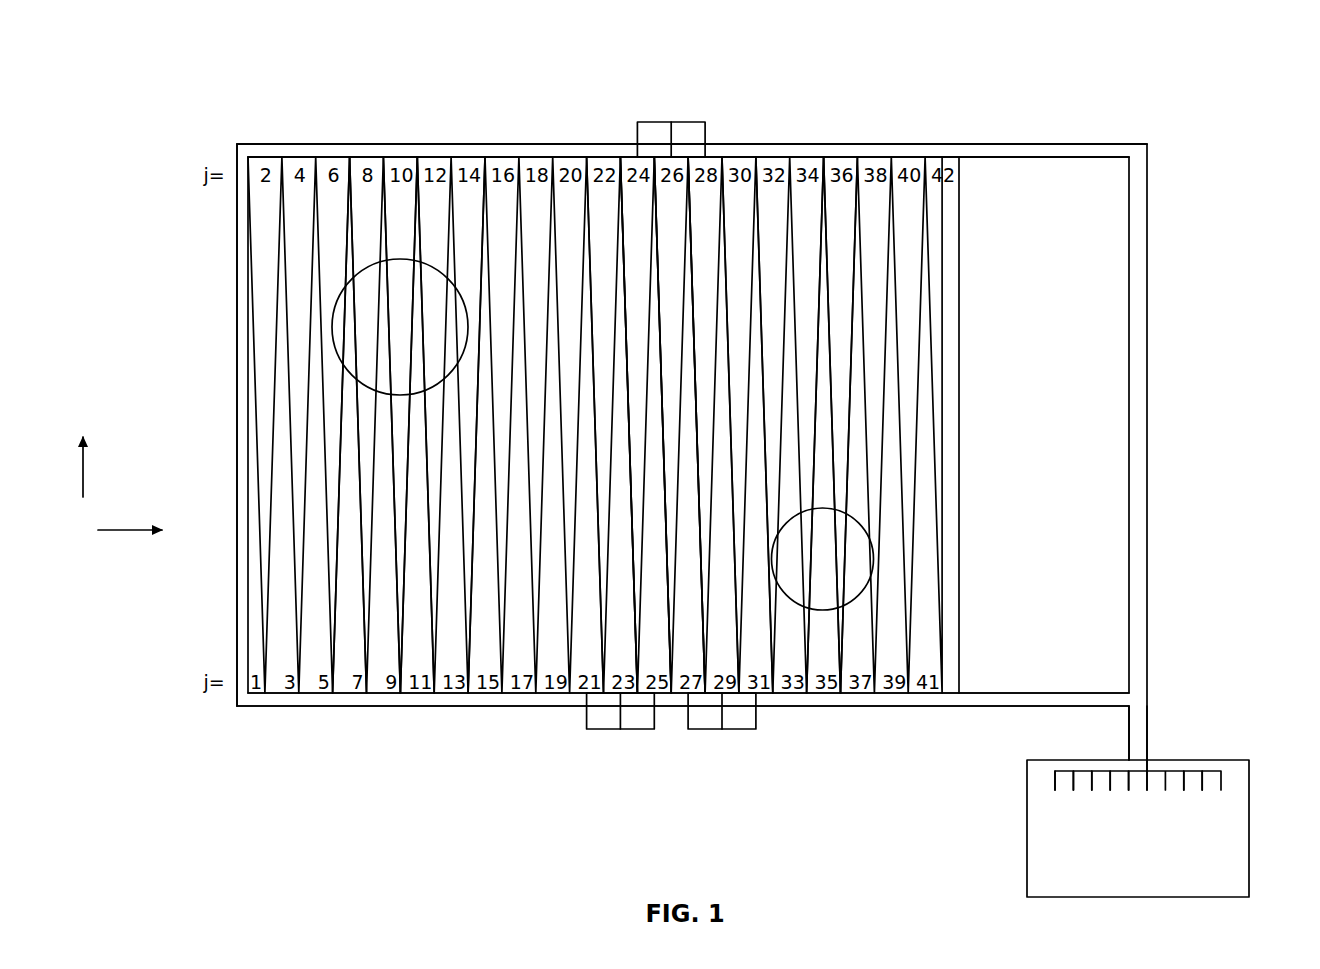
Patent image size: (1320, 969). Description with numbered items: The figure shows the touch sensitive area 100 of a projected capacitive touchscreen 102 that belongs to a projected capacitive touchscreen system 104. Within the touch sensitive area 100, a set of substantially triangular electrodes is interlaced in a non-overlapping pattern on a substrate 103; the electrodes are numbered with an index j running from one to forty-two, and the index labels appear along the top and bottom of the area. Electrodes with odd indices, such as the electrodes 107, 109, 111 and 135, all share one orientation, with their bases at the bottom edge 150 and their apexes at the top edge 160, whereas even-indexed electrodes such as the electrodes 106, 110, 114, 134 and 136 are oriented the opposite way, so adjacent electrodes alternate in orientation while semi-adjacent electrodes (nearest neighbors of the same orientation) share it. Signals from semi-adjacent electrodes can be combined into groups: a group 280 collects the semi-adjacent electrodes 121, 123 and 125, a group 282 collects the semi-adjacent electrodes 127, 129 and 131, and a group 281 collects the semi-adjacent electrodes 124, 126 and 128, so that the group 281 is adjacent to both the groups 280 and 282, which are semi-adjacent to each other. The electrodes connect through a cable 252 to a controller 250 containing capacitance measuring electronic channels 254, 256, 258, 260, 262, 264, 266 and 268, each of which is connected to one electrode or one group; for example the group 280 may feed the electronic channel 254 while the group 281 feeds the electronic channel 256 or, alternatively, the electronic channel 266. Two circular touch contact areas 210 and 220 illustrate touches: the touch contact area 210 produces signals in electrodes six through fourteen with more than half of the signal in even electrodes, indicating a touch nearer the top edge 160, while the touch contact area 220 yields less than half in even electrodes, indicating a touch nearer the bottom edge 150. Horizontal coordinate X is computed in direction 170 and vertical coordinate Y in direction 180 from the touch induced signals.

The touch sensitive area 100 is at (943, 154).
The projected capacitive touchscreen 102 is at (226, 152).
The substrate 103 is at (603, 150).
The projected capacitive touchscreen system 104 is at (214, 74).
The electrode 106 is at (333, 157).
The electrode 107 is at (347, 693).
The electrode 109 is at (392, 693).
The electrode 110 is at (398, 157).
The electrode 111 is at (420, 693).
The electrode 114 is at (464, 157).
The semi-adjacent electrode 121 is at (576, 655).
The semi-adjacent electrode 123 is at (609, 655).
The semi-adjacent electrode 124 is at (624, 210).
The semi-adjacent electrode 125 is at (643, 655).
The semi-adjacent electrode 126 is at (658, 210).
The semi-adjacent electrode 127 is at (676, 655).
The semi-adjacent electrode 128 is at (691, 210).
The semi-adjacent electrode 129 is at (710, 655).
The semi-adjacent electrode 131 is at (744, 655).
The electrode 134 is at (802, 157).
The electrode 135 is at (823, 693).
The electrode 136 is at (830, 157).
The bottom edge 150 is at (527, 716).
The top edge 160 is at (354, 138).
The direction 170 is at (127, 532).
The direction 180 is at (83, 472).
The touch contact area 210 is at (332, 325).
The touch contact area 220 is at (873, 548).
The controller 250 is at (1210, 760).
The cable 252 is at (1148, 625).
The electronic channel 254 is at (1070, 788).
The electronic channel 256 is at (1094, 788).
The electronic channel 258 is at (1110, 788).
The electronic channel 260 is at (1128, 786).
The electronic channel 262 is at (1147, 787).
The electronic channel 264 is at (1170, 787).
The electronic channel 266 is at (1185, 790).
The electronic channel 268 is at (1205, 788).
The group 280 is at (578, 734).
The group 281 is at (660, 115).
The group 282 is at (765, 736).